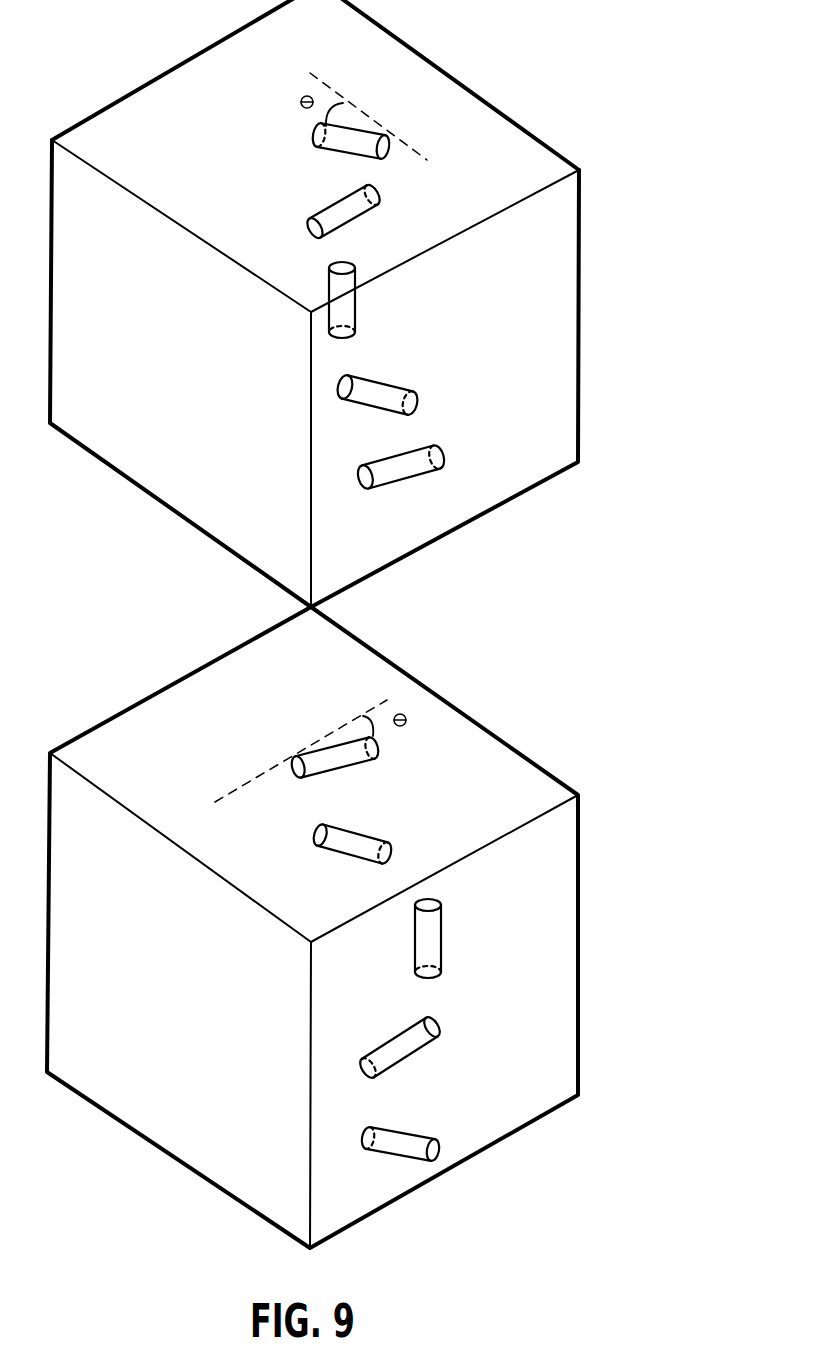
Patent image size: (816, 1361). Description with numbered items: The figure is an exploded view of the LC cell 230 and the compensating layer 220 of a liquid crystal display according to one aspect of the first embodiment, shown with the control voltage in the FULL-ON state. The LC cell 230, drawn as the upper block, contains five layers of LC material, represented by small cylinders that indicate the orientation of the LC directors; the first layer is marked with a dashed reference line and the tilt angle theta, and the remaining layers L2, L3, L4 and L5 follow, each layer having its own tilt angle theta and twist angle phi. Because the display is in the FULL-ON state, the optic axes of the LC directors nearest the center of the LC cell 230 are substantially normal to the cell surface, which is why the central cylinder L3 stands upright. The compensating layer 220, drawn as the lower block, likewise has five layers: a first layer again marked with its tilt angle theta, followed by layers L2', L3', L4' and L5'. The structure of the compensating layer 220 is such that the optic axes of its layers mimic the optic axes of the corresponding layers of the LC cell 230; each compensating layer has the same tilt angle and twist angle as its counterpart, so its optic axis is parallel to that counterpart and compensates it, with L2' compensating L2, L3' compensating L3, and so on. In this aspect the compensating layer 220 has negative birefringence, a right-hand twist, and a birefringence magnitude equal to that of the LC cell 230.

The LC cell 230 is at (578, 358).
The compensating layer 220 is at (578, 950).
The second layer of LC material L2 is at (401, 377).
The third layer of LC material L3 is at (312, 292).
The fourth layer of LC material L4 is at (318, 210).
The fifth layer of LC material L5 is at (332, 116).
The second layer of compensating layer L2' is at (380, 821).
The third layer of compensating layer L3' is at (469, 934).
The fourth layer of compensating layer L4' is at (441, 1033).
The fifth layer of compensating layer L5' is at (430, 1116).